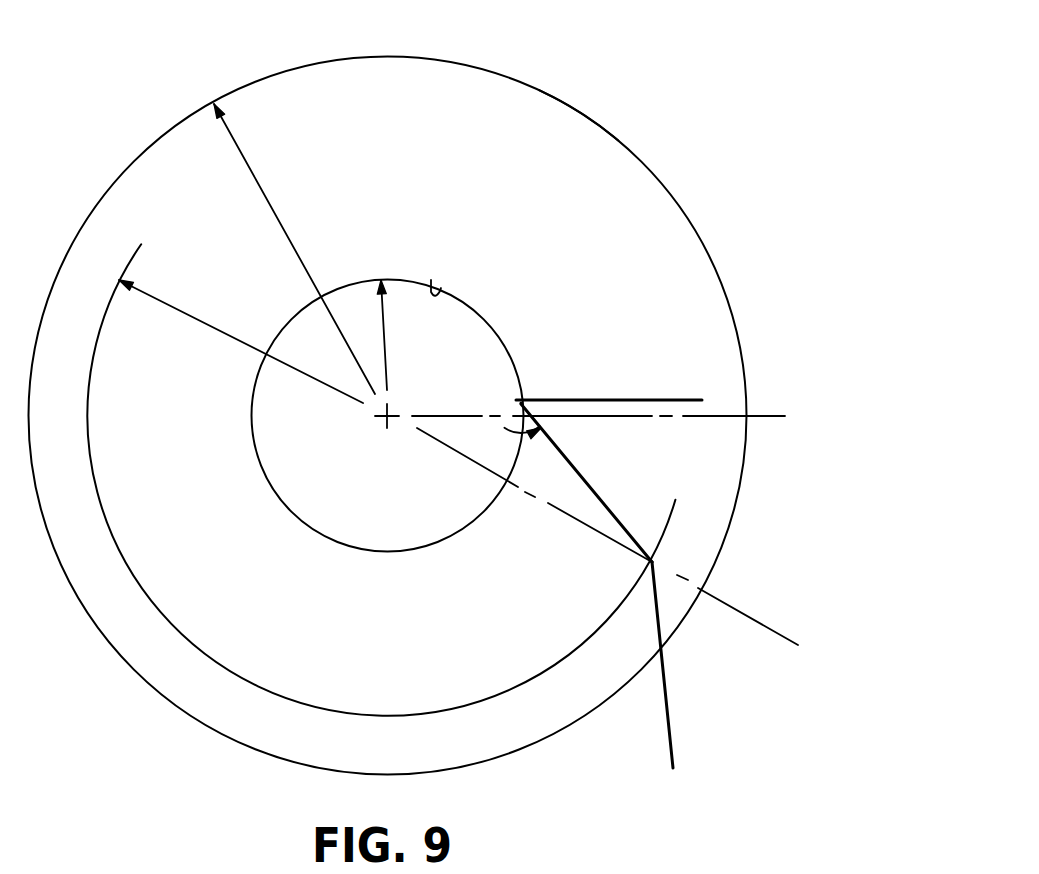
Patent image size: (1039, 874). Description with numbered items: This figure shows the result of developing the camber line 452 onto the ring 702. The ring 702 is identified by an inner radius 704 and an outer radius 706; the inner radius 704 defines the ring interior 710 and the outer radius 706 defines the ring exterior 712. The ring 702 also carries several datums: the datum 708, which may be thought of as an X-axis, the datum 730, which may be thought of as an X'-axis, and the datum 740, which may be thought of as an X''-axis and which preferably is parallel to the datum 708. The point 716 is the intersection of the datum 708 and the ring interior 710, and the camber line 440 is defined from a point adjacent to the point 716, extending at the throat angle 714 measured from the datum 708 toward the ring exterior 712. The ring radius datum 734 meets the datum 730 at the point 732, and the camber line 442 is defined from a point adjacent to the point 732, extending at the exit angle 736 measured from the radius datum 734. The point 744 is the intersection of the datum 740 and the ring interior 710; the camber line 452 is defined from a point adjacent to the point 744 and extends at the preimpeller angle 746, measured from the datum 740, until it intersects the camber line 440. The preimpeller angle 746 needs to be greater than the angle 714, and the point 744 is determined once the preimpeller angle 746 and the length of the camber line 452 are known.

The ring 702 is at (585, 199).
The inner radius 704 is at (380, 279).
The outer radius 706 is at (215, 102).
The datum 708 is at (760, 416).
The ring interior 710 is at (431, 285).
The ring exterior 712 is at (582, 112).
The throat angle 714 is at (635, 423).
The point 716 is at (504, 428).
The datum 730 is at (710, 595).
The point 732 is at (653, 562).
The ring radius datum 734 is at (119, 276).
The exit angle 736 is at (769, 633).
The datum 740 is at (672, 398).
The point 744 is at (521, 402).
The preimpeller angle 746 is at (553, 395).
The camber line 440 is at (625, 530).
The camber line 442 is at (668, 742).
The camber line 452 is at (531, 416).